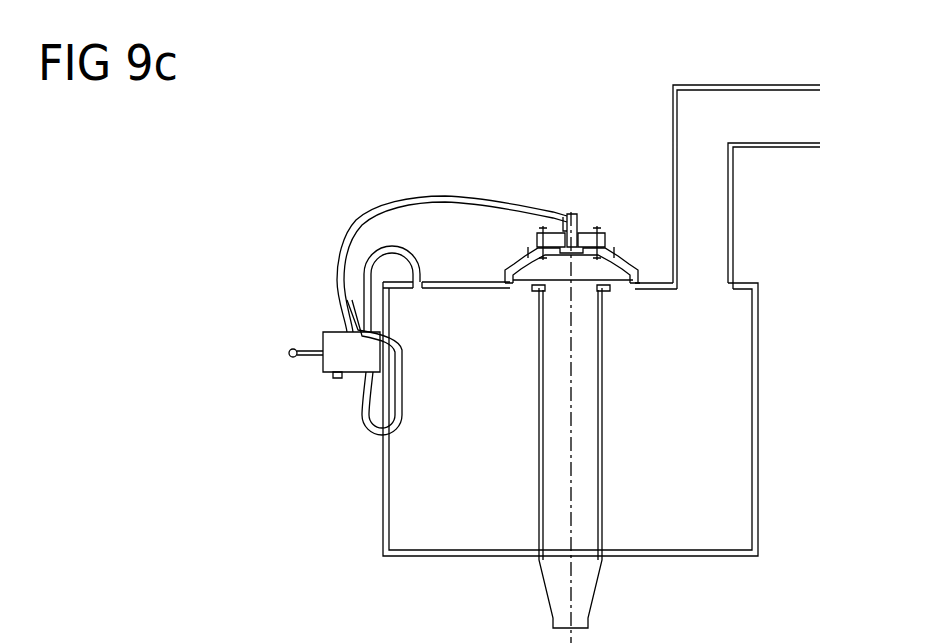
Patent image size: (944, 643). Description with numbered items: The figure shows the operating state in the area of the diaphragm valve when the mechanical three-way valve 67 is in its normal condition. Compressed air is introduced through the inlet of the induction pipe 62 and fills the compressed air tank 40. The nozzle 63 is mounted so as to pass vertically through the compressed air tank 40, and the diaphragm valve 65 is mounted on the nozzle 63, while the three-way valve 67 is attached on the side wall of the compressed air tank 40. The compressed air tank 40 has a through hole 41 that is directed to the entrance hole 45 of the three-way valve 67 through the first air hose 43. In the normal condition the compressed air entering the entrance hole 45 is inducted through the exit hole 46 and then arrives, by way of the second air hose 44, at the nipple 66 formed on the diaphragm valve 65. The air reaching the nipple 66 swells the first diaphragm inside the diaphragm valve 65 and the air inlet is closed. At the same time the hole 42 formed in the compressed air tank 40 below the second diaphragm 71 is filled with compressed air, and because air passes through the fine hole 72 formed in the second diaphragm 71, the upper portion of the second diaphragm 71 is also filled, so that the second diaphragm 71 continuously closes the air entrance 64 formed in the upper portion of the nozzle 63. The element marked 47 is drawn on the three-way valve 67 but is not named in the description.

The compressed air tank 40 is at (715, 490).
The through hole 41 is at (425, 268).
The hole 42 is at (522, 293).
The first air hose 43 is at (391, 246).
The second air hose 44 is at (485, 200).
The entrance hole 45 is at (366, 388).
The exit hole 46 is at (337, 328).
The probe 47 is at (283, 360).
The induction pipe 62 is at (777, 132).
The nozzle 63 is at (578, 405).
The air entrance 64 is at (545, 292).
The diaphragm valve 65 is at (597, 212).
The nipple 66 is at (561, 231).
The mechanical 3-way valve 67 is at (318, 370).
The second diaphragm 71 is at (603, 292).
The fine hole 72 is at (615, 281).